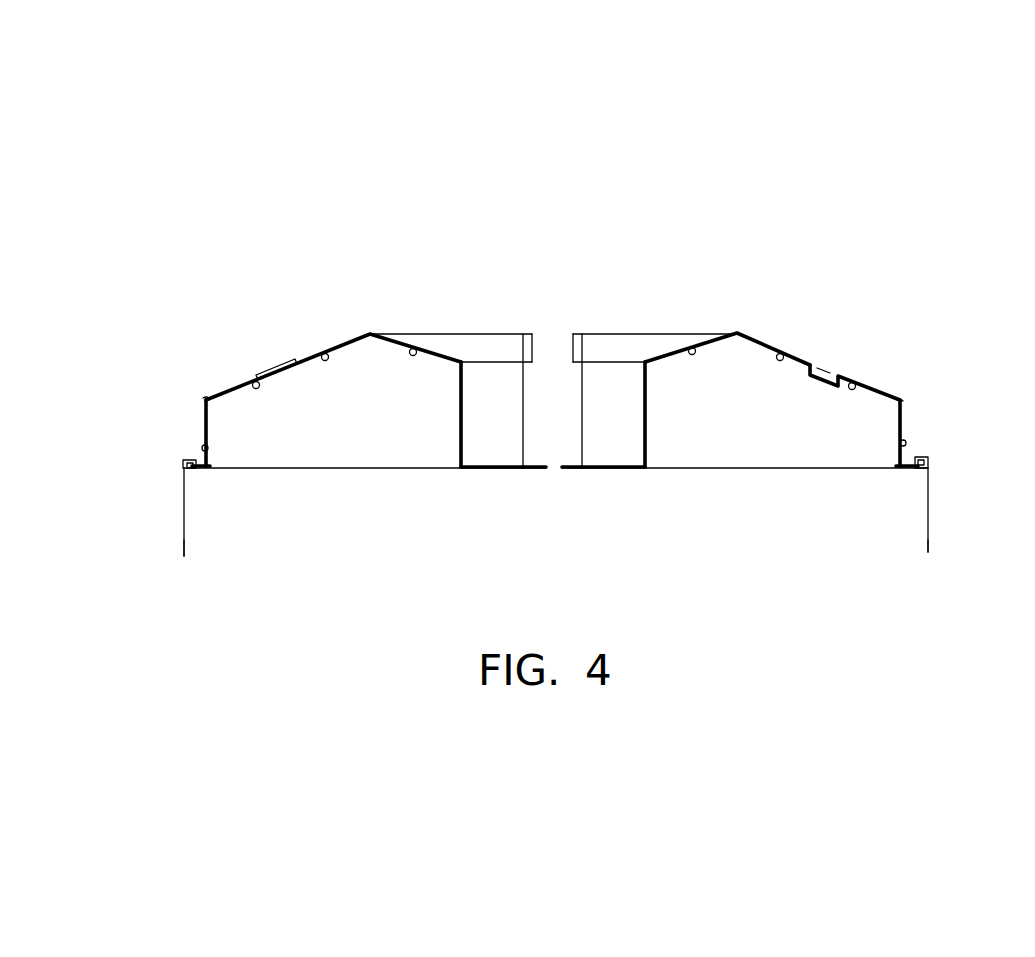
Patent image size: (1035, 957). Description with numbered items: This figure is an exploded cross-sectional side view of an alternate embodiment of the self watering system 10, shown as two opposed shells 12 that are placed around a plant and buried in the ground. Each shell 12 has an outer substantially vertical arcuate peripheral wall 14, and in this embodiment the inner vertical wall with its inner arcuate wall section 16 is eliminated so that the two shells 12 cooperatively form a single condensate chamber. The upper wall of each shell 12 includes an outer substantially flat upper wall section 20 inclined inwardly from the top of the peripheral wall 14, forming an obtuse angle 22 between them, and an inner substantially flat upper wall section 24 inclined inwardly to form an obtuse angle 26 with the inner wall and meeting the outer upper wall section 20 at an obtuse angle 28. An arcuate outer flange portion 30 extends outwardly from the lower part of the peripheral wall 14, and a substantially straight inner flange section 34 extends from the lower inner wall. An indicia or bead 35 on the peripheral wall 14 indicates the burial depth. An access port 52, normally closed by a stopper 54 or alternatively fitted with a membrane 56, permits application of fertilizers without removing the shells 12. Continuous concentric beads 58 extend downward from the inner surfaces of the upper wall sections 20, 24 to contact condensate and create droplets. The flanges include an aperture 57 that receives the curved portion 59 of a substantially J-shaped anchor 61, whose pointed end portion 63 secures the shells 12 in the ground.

The self watering system 10 is at (737, 307).
The shell 12 is at (242, 327).
The outer substantially vertical semi-circular or arcuate peripheral wall 14 is at (203, 440).
The inner semi-circular or arcuate wall section 16 is at (487, 418).
The outer substantially flat upper wall section 20 is at (349, 343).
The obtuse angle 22 is at (205, 397).
The inner substantially flat upper wall section 24 is at (452, 347).
The obtuse angle 26 is at (488, 361).
The obtuse angle 28 is at (407, 333).
The substantially semi-circular or arcuate outer flange portion 30 is at (204, 465).
The substantially straight inner flange section 34 is at (523, 472).
The indicia or bead or protrusion 35 is at (203, 449).
The access port or aperture 52 is at (270, 386).
The stopper 54 is at (283, 363).
The membrane 56 is at (830, 372).
The aperture 57 is at (192, 470).
The continuous concentric beads or protrusions 58 is at (256, 386).
The curved portion 59 is at (196, 471).
The substantially J-shaped anchor 61 is at (184, 525).
The pointed end portion 63 is at (186, 548).